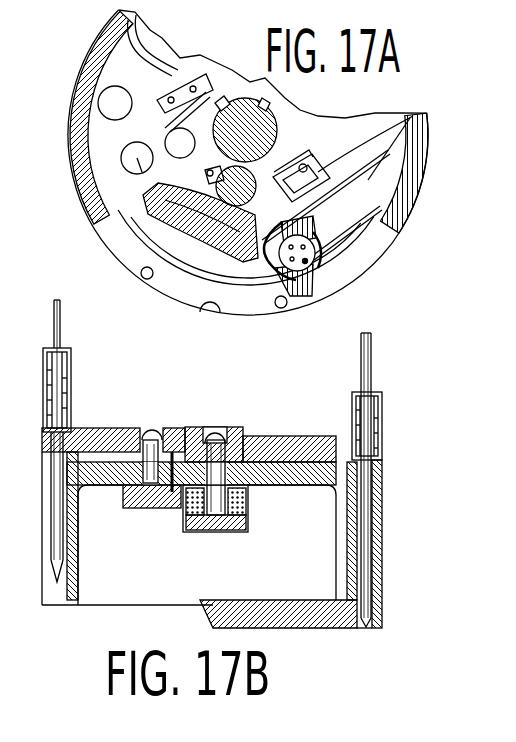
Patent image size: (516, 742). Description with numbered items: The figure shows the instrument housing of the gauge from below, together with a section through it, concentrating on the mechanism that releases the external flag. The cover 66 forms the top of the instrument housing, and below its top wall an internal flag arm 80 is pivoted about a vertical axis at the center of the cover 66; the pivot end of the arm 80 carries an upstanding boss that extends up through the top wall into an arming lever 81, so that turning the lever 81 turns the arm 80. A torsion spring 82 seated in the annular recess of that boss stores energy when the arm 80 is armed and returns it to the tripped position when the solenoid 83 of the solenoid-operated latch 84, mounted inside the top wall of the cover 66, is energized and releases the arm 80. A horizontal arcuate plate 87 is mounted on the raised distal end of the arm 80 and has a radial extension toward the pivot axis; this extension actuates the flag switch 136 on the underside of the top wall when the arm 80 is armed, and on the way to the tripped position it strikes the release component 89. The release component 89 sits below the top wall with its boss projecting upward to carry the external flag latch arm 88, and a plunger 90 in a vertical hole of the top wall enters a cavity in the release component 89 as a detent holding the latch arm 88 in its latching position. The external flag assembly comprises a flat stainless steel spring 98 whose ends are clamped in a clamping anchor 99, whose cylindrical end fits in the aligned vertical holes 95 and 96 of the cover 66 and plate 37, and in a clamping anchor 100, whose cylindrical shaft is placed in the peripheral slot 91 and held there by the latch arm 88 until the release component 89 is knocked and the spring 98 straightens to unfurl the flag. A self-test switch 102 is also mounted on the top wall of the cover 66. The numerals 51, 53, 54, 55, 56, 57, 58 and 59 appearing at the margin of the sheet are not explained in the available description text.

In FIG. 17A, the cover 66 is at (80, 78).
In FIG. 17B, the cover 66 is at (276, 437).
In FIG. 17A, the switch 102 is at (163, 149).
In FIG. 17A, the arcuate plate 87 is at (190, 160).
In FIG. 17A, the release component 89 is at (250, 200).
In FIG. 17B, the release component 89 is at (150, 508).
In FIG. 17A, the flag switch 136 is at (320, 180).
In FIG. 17A, the solenoid-operated latch 84 is at (347, 215).
In FIG. 17A, the solenoid 83 is at (306, 270).
In FIG. 17A, the element 59 is at (10, 181).
In FIG. 17B, the element 57 is at (10, 298).
In FIG. 17B, the flat stainless steel spring 98 is at (61, 318).
In FIG. 17B, the element 51 is at (10, 345).
In FIG. 17B, the clamping anchor 100 is at (72, 374).
In FIG. 17B, the element 58 is at (10, 375).
In FIG. 17B, the element 55 is at (10, 400).
In FIG. 17B, the element 56 is at (10, 428).
In FIG. 17B, the external flag latch arm 88 is at (88, 428).
In FIG. 17B, the plunger 90 is at (173, 430).
In FIG. 17B, the arming lever 81 is at (258, 432).
In FIG. 17B, the clamping anchor 99 is at (383, 414).
In FIG. 17B, the cross plate 54 is at (168, 532).
In FIG. 17B, the element 53 is at (10, 511).
In FIG. 17B, the torsion spring 82 is at (249, 508).
In FIG. 17B, the internal flag arm 80 is at (246, 536).
In FIG. 17B, the vertical hole 95 is at (369, 563).
In FIG. 17B, the slot 91 is at (62, 603).
In FIG. 17B, the cylindrical plate 37 is at (284, 628).
In FIG. 17B, the vertical hole 96 is at (368, 628).